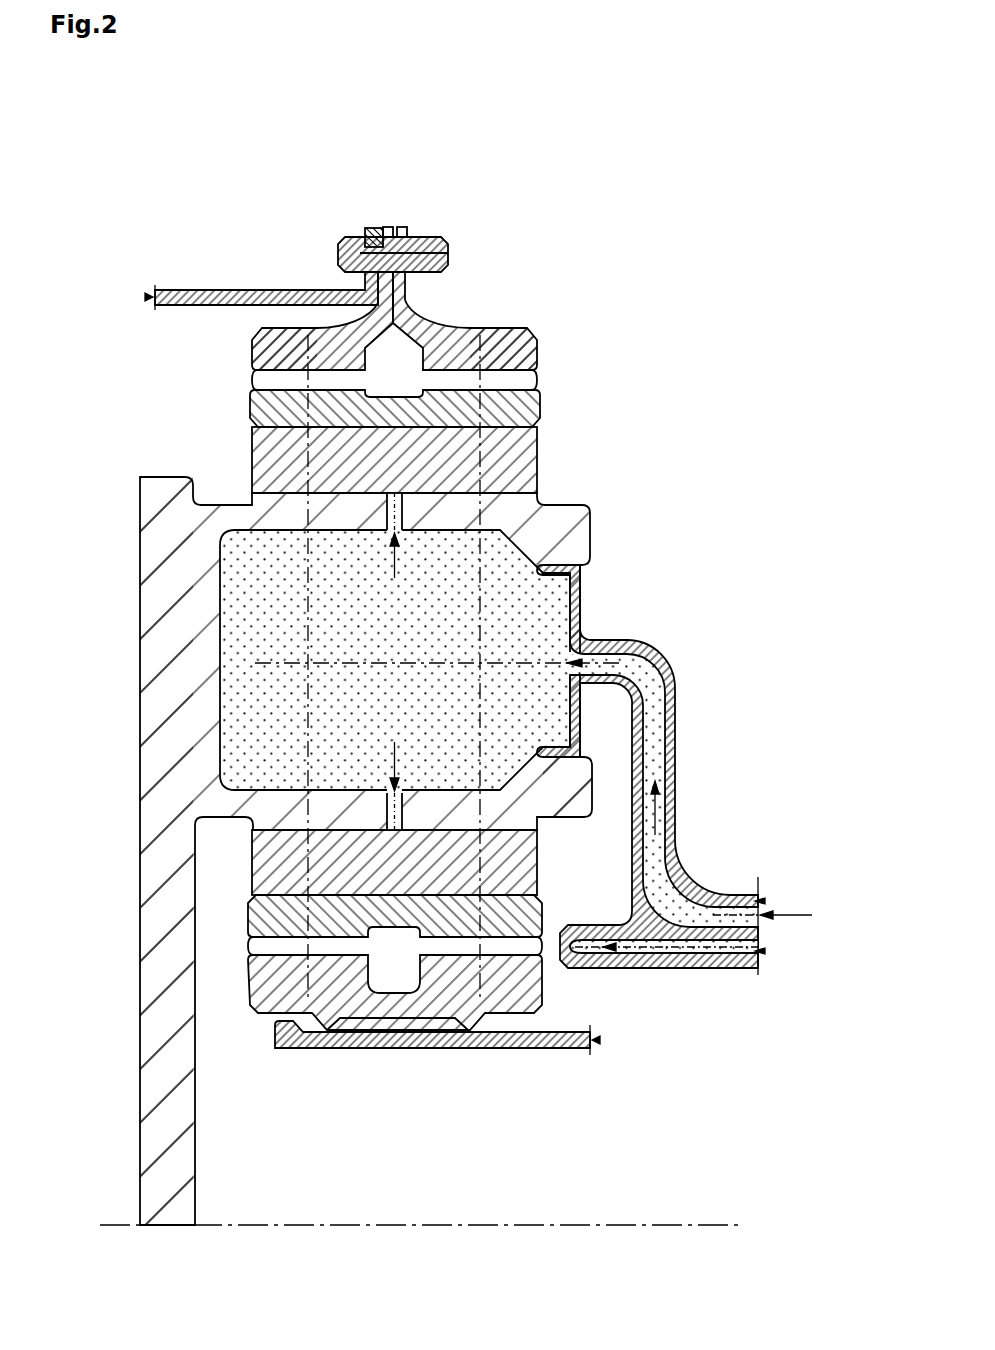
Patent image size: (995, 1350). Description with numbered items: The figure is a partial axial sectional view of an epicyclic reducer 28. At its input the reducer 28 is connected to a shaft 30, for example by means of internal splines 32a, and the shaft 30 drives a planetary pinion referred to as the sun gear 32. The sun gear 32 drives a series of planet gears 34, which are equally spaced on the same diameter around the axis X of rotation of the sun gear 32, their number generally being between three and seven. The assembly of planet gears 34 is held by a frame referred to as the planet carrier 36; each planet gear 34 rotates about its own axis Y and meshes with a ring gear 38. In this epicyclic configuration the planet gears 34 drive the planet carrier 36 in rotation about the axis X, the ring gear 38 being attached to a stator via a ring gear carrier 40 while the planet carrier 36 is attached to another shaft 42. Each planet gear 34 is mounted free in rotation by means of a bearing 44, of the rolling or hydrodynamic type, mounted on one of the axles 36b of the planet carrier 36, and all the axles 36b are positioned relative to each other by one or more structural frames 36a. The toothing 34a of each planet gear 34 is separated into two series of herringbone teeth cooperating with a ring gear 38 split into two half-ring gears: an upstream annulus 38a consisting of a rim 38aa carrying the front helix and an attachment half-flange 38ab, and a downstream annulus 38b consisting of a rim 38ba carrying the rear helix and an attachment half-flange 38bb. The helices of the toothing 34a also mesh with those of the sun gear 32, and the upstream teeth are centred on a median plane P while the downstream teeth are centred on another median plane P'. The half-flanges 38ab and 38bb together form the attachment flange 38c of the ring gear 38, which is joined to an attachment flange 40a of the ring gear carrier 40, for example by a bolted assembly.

The epicyclic reducer 28 is at (705, 437).
The shaft 30 is at (542, 1040).
The sun gear 32 is at (276, 1049).
The internal splines 32a is at (380, 1112).
The planet gear 34 is at (510, 415).
The toothing 34a is at (258, 379).
The planet carrier 36 is at (432, 851).
The structural frame 36a is at (140, 622).
The axle 36b is at (577, 797).
The ring gear 38 is at (404, 228).
The upstream annulus 38a is at (283, 303).
The rim 38aa is at (280, 340).
The attachment half-flange 38ab is at (387, 227).
The downstream annulus 38b is at (514, 299).
The rim 38ba is at (467, 340).
The attachment half-flange 38bb is at (441, 181).
The attachment flange 38c is at (402, 158).
The ring gear carrier 40 is at (294, 237).
The attachment flange 40a is at (368, 232).
The shaft 42 is at (261, 245).
The bearing 44 is at (527, 460).
The median plane P is at (201, 1051).
The median plane P' is at (473, 1077).
The axis X is at (685, 1225).
The axis Y is at (545, 660).